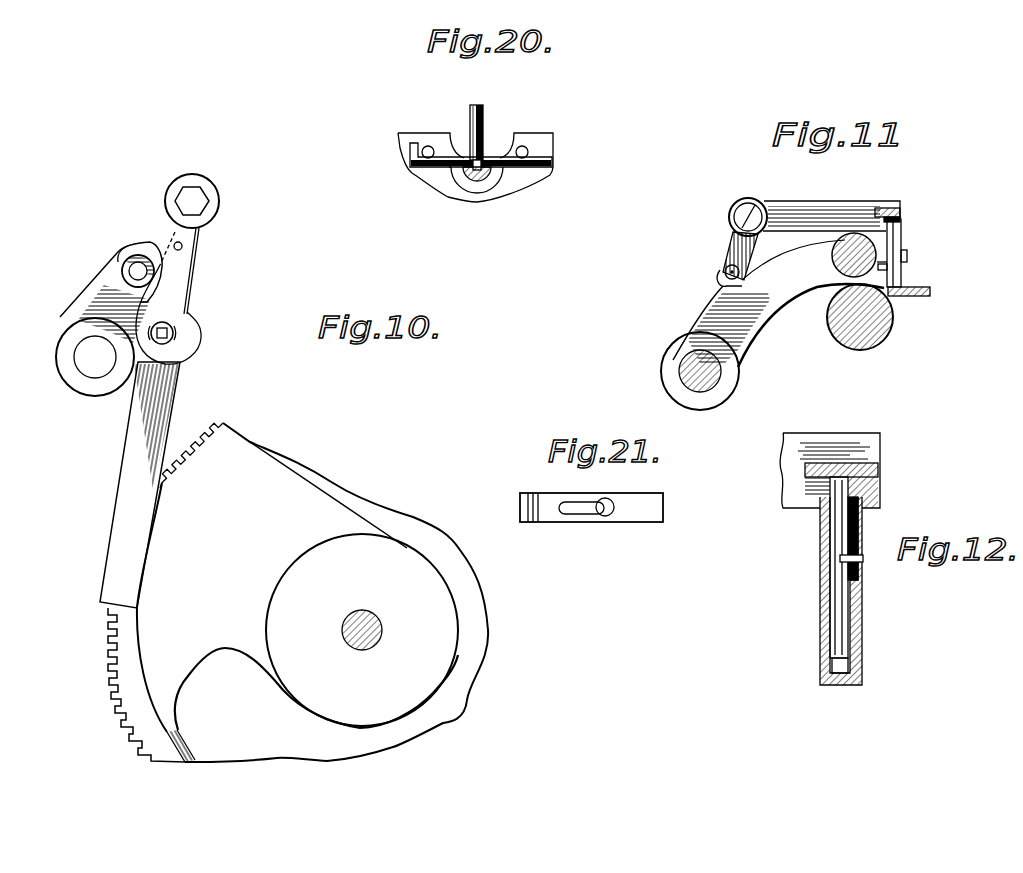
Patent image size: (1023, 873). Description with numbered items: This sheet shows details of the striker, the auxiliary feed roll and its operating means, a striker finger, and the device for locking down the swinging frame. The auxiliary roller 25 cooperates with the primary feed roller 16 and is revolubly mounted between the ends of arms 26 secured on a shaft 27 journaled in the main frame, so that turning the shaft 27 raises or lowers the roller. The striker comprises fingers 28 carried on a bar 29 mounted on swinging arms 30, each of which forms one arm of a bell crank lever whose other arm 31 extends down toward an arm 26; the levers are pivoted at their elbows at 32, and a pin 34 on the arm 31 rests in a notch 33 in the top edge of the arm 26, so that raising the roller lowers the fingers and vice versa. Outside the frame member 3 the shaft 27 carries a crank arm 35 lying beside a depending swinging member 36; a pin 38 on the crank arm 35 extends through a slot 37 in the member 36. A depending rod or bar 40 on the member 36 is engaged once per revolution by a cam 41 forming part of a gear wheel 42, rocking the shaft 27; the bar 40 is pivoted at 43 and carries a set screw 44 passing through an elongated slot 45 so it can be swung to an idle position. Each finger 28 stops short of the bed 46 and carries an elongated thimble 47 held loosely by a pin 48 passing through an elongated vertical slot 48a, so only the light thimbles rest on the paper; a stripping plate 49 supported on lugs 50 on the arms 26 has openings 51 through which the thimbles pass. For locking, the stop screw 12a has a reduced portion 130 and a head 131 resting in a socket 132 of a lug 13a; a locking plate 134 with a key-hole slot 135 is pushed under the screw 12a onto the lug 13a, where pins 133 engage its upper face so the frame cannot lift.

In FIG. 20, the frame member 3 is at (548, 183).
In FIG. 20, the stop screw 12a is at (485, 115).
In FIG. 20, the lug 13a is at (478, 182).
In FIG. 11, the shaft 16 is at (855, 333).
In FIG. 11, the roller 25 is at (845, 258).
In FIG. 11, the arms 26 is at (784, 292).
In FIG. 10, the shaft 27 is at (100, 366).
In FIG. 11, the shaft 27 is at (688, 369).
In FIG. 11, the fingers 28 is at (876, 212).
In FIG. 12, the fingers 28 is at (836, 546).
In FIG. 11, the bar 29 is at (892, 210).
In FIG. 12, the bar 29 is at (878, 470).
In FIG. 11, the swinging arms 30 is at (825, 190).
In FIG. 12, the swinging arms 30 is at (838, 436).
In FIG. 11, the arm 31 is at (733, 244).
In FIG. 11, the pivot 32 is at (731, 207).
In FIG. 11, the notch 33 is at (720, 286).
In FIG. 11, the pin 34 is at (725, 272).
In FIG. 10, the crank arm 35 is at (100, 301).
In FIG. 10, the swinging member 36 is at (176, 272).
In FIG. 10, the slot 37 is at (129, 250).
In FIG. 10, the pin 38 is at (128, 270).
In FIG. 10, the rod or bar 40 is at (128, 486).
In FIG. 10, the cam 41 is at (133, 641).
In FIG. 10, the gear wheel 42 is at (128, 690).
In FIG. 10, the pivot 43 is at (183, 246).
In FIG. 10, the set screw 44 is at (169, 326).
In FIG. 10, the elongated slot 45 is at (180, 337).
In FIG. 11, the bed 46 is at (922, 297).
In FIG. 11, the thimble 47 is at (902, 232).
In FIG. 12, the thimble 47 is at (820, 605).
In FIG. 12, the pin 48 is at (863, 561).
In FIG. 12, the elongated vertical slot 48a is at (858, 535).
In FIG. 11, the stripping plate 49 is at (905, 263).
In FIG. 11, the lugs 50 is at (907, 251).
In FIG. 11, the openings or slots 51 is at (908, 256).
In FIG. 20, the reduced portion 130 is at (490, 150).
In FIG. 20, the head 131 is at (462, 178).
In FIG. 20, the socket 132 is at (492, 178).
In FIG. 20, the pins 133 is at (428, 146).
In FIG. 20, the locking plate 134 is at (410, 160).
In FIG. 21, the locking plate 134 is at (549, 512).
In FIG. 21, the key-hole slot 135 is at (598, 512).